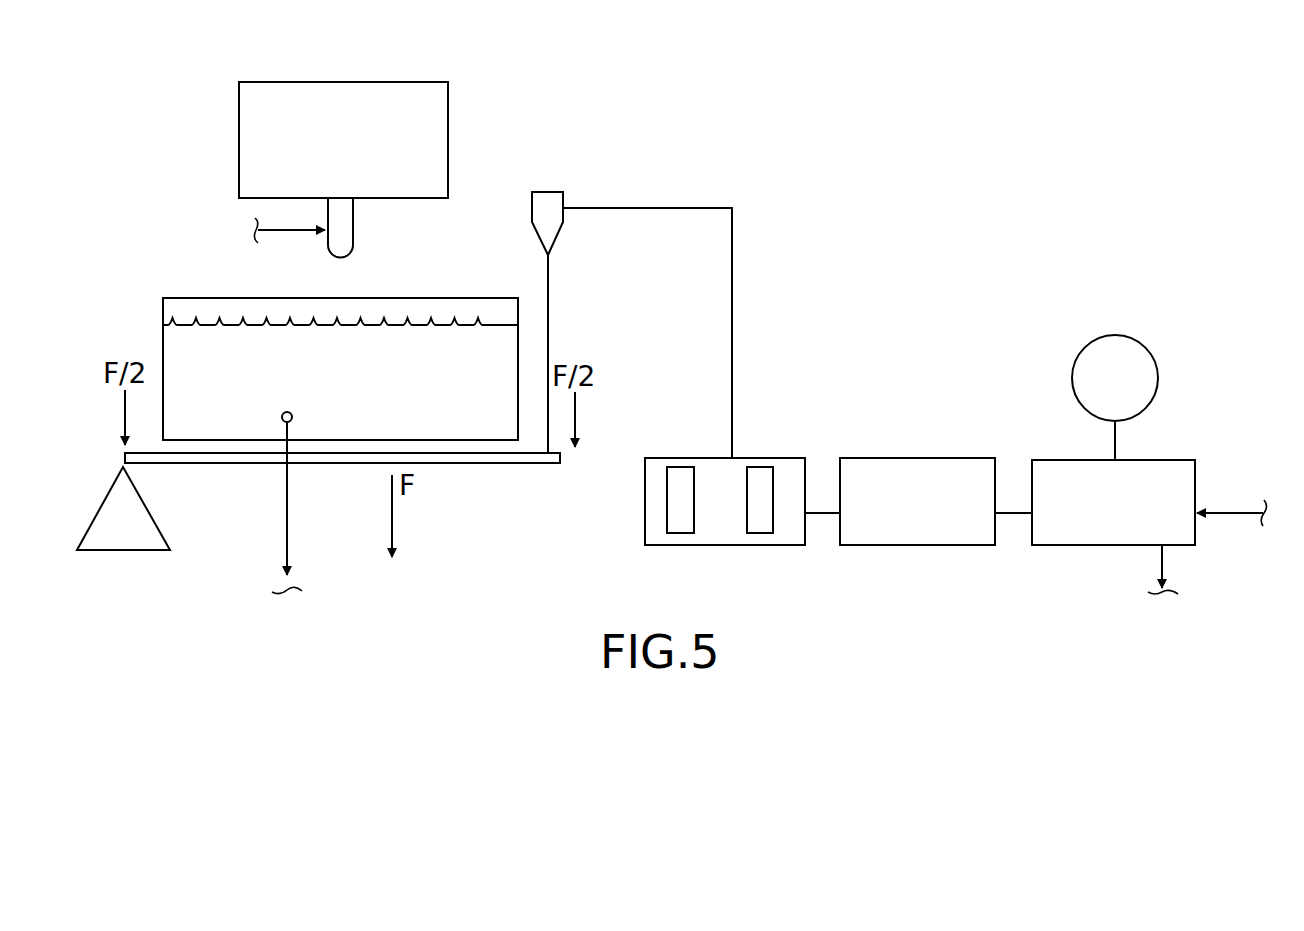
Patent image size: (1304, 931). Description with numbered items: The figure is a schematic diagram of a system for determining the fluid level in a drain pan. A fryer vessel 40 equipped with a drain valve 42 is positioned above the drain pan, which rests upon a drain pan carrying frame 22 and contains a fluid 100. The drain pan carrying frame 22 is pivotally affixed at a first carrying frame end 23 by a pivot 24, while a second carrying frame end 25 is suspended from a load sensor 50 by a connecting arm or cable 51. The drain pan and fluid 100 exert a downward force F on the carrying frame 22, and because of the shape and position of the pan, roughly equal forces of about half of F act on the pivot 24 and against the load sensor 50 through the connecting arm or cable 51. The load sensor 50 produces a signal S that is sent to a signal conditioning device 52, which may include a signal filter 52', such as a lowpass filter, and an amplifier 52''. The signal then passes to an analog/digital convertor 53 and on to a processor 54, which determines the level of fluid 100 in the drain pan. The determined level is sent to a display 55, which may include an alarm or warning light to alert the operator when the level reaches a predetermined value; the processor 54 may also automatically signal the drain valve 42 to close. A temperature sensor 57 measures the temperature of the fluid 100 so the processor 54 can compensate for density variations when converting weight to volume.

The fryer vessel 40 is at (239, 132).
The drain valve 42 is at (353, 230).
The load sensor 50 is at (532, 200).
The connecting arm or cable 51 is at (548, 309).
The fluid 100 is at (355, 389).
The temperature sensor 57 is at (283, 413).
The drain pan carrying frame 22 is at (328, 465).
The first carrying frame end 23 is at (112, 457).
The pivot 24 is at (152, 507).
The second carrying frame end 25 is at (562, 476).
The signal conditioning device 52 is at (742, 532).
The signal filter 52' is at (692, 465).
The amplifier 52'' is at (714, 543).
The analog/digital convertor 53 is at (927, 545).
The processor 54 is at (1113, 545).
The display 55 is at (1072, 368).